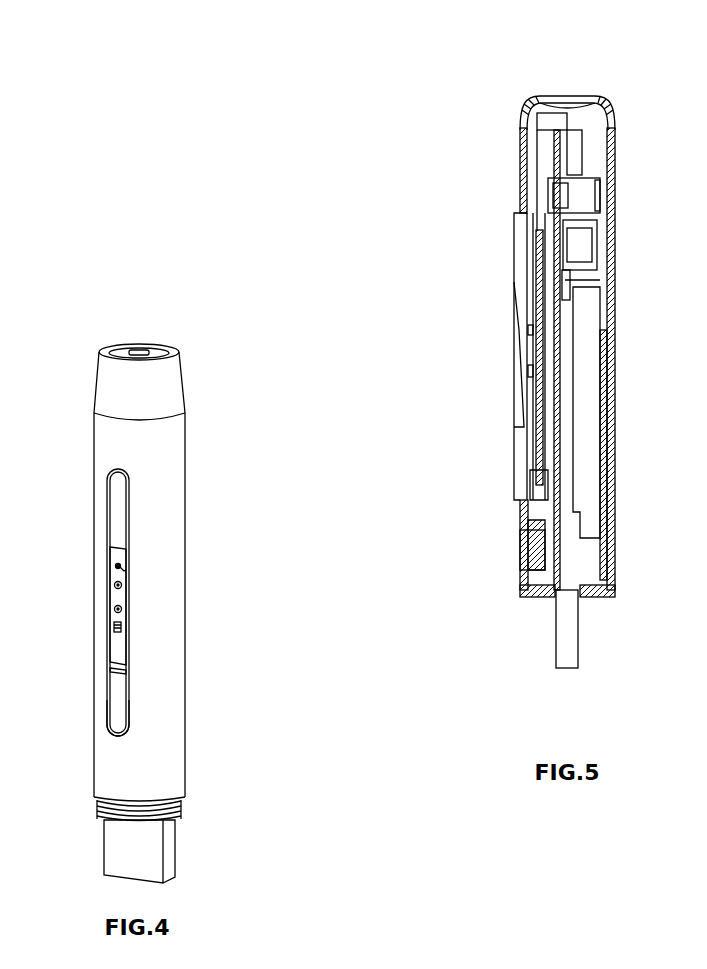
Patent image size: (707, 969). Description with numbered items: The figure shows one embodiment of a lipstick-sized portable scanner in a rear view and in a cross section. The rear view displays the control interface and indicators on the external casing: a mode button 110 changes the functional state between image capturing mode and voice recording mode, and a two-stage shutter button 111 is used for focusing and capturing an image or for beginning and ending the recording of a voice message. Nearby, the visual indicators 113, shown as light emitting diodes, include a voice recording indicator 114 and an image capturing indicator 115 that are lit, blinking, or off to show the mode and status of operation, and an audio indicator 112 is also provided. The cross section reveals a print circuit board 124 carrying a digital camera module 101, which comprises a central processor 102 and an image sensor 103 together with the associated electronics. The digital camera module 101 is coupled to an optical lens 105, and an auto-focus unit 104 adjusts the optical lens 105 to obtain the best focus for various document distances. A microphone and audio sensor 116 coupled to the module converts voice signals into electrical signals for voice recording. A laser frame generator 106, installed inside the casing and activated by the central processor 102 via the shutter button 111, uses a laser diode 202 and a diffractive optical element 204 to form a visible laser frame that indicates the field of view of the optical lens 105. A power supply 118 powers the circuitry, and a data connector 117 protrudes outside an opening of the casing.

In FIG. 5, the digital camera module 101 is at (448, 296).
In FIG. 5, the central processor 102 is at (566, 296).
In FIG. 5, the image sensor 103 is at (560, 247).
In FIG. 5, the auto-focus unit 104 is at (578, 280).
In FIG. 5, the optical lens 105 is at (583, 252).
In FIG. 5, the laser frame generator 106 is at (577, 153).
In FIG. 4, the mode button 110 is at (110, 487).
In FIG. 4, the shutter button 111 is at (110, 720).
In FIG. 4, the audio indicator 112 is at (112, 540).
In FIG. 4, the visual indicators 113 is at (122, 609).
In FIG. 5, the voice recording indicator 114 is at (528, 334).
In FIG. 5, the image capturing indicator 115 is at (528, 372).
In FIG. 5, the microphone and audio sensor 116 is at (552, 120).
In FIG. 5, the data connector 117 is at (575, 620).
In FIG. 5, the power supply 118 is at (590, 522).
In FIG. 5, the print circuit board 124 is at (556, 565).
In FIG. 5, the laser diode 202 is at (560, 194).
In FIG. 5, the diffractive optical element 204 is at (600, 188).